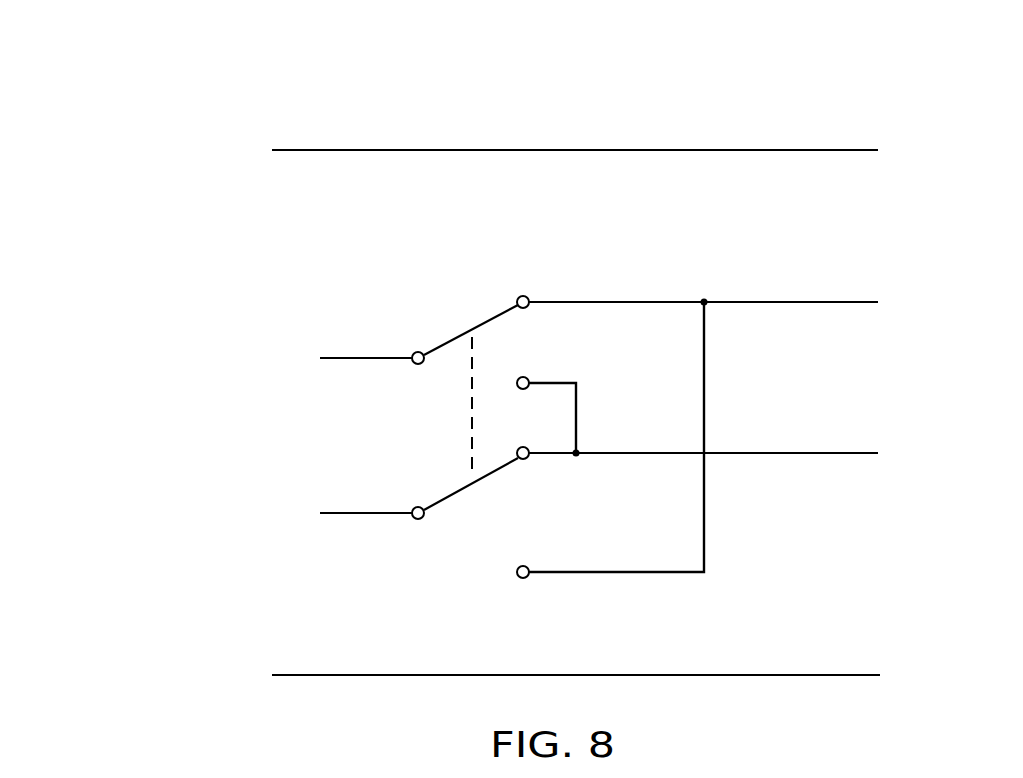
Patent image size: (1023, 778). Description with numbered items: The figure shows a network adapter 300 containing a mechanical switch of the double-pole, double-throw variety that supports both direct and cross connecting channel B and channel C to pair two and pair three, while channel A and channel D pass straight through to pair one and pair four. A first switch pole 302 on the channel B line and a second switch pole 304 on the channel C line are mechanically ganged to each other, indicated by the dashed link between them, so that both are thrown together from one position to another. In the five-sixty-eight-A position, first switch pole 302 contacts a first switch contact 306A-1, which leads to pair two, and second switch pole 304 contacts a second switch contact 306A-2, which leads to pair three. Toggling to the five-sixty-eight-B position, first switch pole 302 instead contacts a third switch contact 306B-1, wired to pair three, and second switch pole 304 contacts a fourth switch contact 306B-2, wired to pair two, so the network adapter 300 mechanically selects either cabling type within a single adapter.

The network adapter 300 is at (82, 73).
The first switch pole 302 is at (452, 340).
The second switch pole 304 is at (448, 497).
The first switch contact 306A-1 is at (527, 297).
The third switch contact 306B-1 is at (527, 378).
The second switch contact 306A-2 is at (528, 459).
The fourth switch contact 306B-2 is at (521, 578).